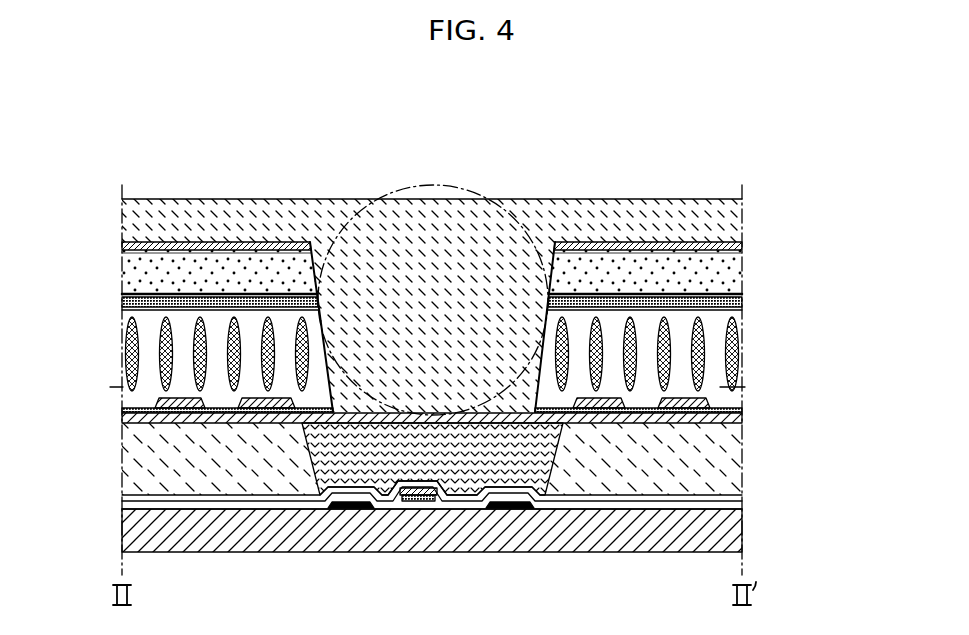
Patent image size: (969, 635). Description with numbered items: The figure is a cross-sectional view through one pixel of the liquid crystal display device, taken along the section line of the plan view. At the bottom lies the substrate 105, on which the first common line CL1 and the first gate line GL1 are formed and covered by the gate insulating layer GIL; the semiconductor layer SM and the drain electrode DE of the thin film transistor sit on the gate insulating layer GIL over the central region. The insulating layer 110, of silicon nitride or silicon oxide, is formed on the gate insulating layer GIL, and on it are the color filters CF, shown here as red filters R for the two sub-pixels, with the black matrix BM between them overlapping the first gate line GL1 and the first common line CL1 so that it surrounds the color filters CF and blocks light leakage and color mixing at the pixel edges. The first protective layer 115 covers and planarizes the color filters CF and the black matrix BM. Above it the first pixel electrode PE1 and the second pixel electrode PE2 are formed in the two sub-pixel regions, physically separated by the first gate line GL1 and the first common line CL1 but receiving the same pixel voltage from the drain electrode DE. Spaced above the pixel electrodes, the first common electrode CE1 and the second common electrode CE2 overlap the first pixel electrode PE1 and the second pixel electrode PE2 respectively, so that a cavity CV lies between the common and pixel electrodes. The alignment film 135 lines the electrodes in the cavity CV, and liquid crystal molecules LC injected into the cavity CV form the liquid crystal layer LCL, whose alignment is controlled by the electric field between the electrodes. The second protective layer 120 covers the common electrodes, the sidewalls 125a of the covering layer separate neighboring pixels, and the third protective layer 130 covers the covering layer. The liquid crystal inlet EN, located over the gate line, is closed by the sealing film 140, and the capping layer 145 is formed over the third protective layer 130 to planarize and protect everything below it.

The capping layer 145 is at (735, 215).
The third protective layer 130 is at (737, 243).
The sidewalls 125a is at (735, 262).
The second protective layer 120 is at (743, 290).
The first common electrode CE1 is at (122, 302).
The second common electrode CE2 is at (740, 302).
The alignment film 135 is at (742, 309).
The cavity CV is at (722, 350).
The liquid crystal layer LCL is at (720, 360).
The liquid crystal molecules LC is at (730, 388).
The first pixel electrode PE1 is at (162, 403).
The second pixel electrode PE2 is at (677, 410).
The first protective layer 115 is at (730, 420).
The color filter CF is at (742, 463).
The red filter R is at (416, 455).
The black matrix BM is at (432, 459).
The insulating layer 110 is at (742, 493).
The gate insulating layer GIL is at (742, 509).
The first common line CL1 is at (350, 508).
The first gate line GL1 is at (512, 508).
The semiconductor layer SM is at (414, 501).
The drain electrode DE is at (428, 493).
The substrate 105 is at (742, 545).
The liquid crystal inlet EN is at (433, 184).
The sealing film 140 is at (527, 298).